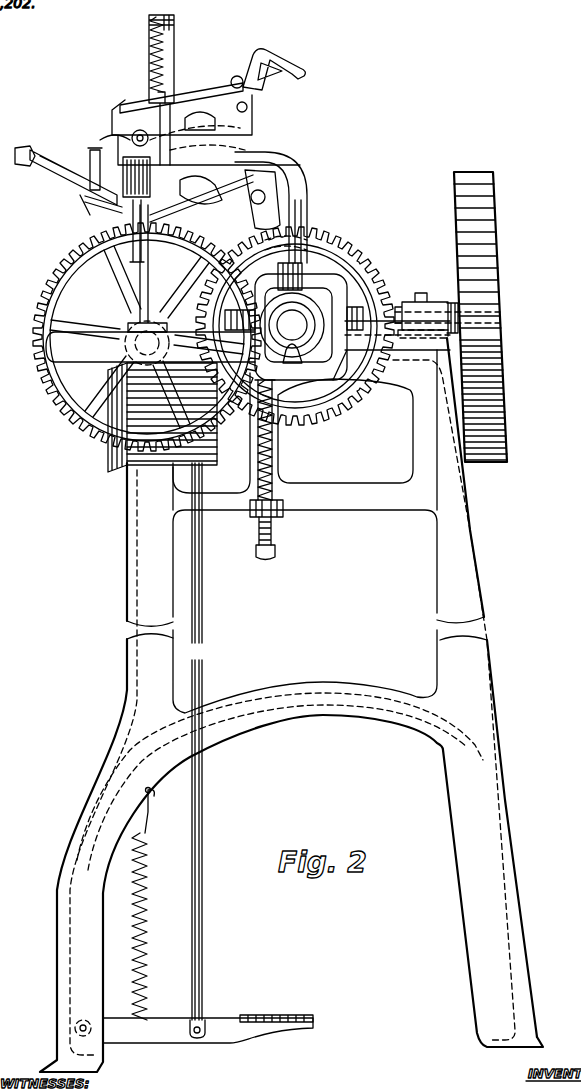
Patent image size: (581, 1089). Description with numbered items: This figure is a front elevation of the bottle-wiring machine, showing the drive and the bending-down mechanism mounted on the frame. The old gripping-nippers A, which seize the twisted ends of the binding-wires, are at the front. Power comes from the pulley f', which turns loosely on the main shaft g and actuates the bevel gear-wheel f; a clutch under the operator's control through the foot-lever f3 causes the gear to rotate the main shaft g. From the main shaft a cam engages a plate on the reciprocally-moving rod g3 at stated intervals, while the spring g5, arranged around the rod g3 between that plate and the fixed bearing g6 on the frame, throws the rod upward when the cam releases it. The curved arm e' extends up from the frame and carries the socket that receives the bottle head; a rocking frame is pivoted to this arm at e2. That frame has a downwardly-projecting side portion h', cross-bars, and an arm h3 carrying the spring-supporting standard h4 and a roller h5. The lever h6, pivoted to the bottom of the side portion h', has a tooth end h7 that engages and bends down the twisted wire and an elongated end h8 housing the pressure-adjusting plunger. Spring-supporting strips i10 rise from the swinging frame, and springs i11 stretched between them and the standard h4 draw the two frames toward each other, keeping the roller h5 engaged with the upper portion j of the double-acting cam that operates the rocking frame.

The gripping-nippers A is at (147, 337).
The bevel gear-wheel f is at (295, 326).
The pulley f' is at (482, 317).
The foot-lever f3 is at (222, 1018).
The main shaft g is at (294, 321).
The reciprocally-moving rod g3 is at (274, 460).
The spring g5 is at (272, 438).
The fixed bearing g6 is at (284, 508).
The curved arm e' is at (285, 207).
The pivot of rocking frame e2 is at (131, 135).
The downwardly-projecting side portion h' is at (97, 130).
The arm h3 is at (201, 97).
The spring-supporting standard h4 is at (175, 43).
The roller h5 is at (239, 76).
The lever h6 is at (84, 187).
The tooth end h7 is at (106, 204).
The elongated end h8 is at (83, 159).
The spring-supporting strips i10 is at (150, 108).
The springs i11 is at (152, 53).
The upper portion of double-acting cam j is at (284, 70).